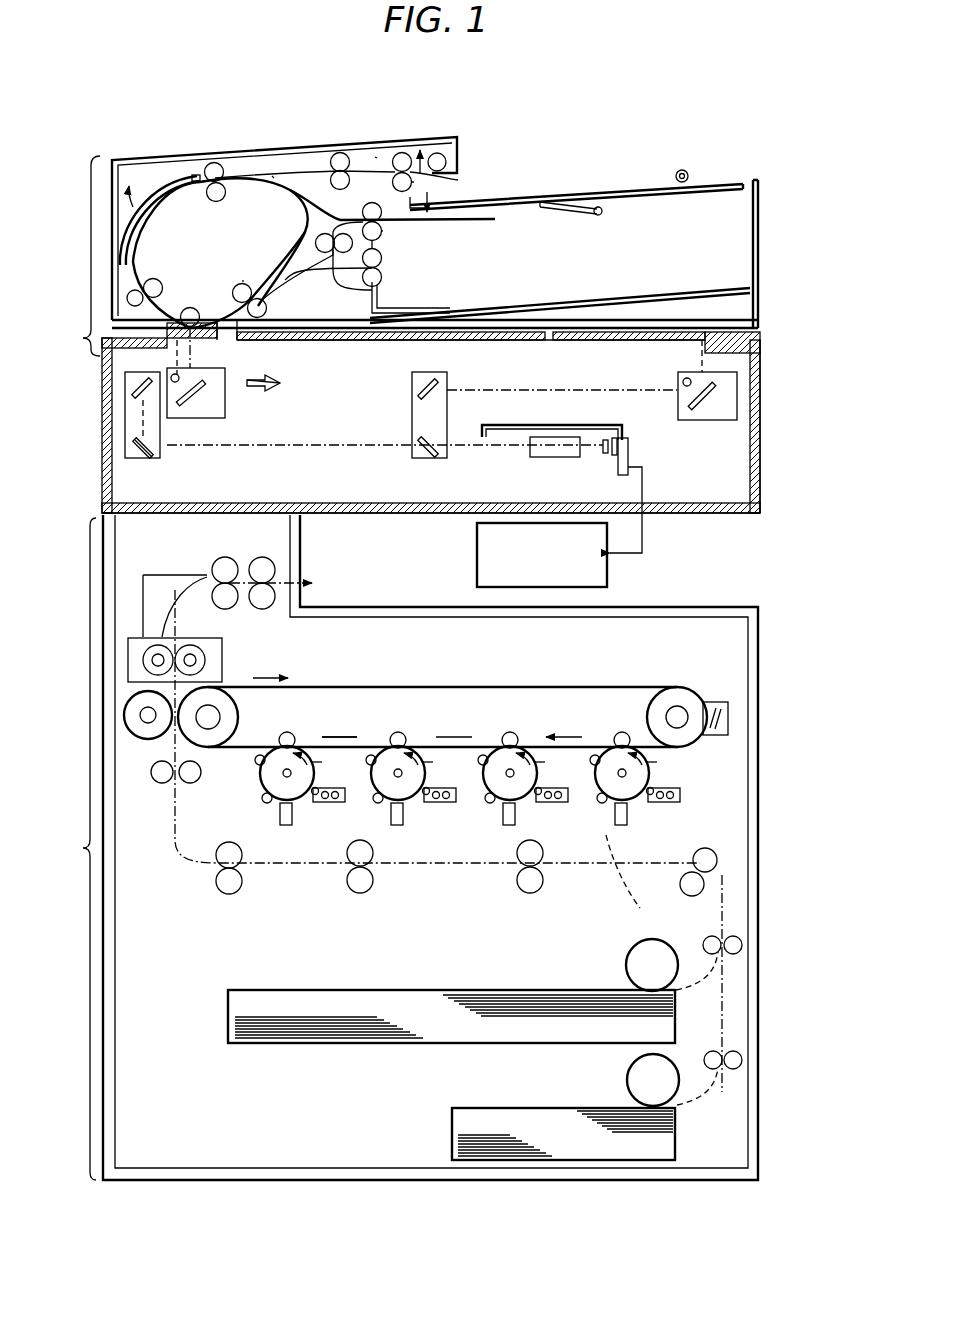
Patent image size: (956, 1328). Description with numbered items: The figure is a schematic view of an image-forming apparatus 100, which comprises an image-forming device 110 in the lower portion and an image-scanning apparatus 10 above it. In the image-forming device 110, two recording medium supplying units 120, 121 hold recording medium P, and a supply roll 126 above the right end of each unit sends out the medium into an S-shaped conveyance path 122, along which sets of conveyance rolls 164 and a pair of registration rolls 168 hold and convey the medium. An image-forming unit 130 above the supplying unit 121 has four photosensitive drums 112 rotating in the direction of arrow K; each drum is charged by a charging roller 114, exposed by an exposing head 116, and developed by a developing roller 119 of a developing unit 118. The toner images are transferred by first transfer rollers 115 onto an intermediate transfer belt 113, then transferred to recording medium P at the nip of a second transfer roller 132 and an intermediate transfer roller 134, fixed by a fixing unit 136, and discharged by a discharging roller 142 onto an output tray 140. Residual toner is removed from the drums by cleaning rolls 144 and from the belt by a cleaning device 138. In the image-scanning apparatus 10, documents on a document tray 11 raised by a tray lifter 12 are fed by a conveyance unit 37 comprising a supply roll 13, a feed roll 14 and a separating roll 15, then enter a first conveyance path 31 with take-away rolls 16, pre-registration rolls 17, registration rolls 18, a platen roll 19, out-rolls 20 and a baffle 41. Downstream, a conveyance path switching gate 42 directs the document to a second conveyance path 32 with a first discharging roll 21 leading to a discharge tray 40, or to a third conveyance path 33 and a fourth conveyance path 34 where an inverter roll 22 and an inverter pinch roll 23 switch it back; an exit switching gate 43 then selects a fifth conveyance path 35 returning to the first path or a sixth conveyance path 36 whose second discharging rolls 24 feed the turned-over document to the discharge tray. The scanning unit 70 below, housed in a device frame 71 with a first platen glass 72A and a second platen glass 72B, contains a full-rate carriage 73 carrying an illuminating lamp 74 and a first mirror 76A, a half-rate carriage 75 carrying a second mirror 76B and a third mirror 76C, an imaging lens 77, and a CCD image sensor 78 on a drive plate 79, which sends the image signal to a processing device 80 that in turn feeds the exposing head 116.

The image-forming apparatus 100 is at (88, 128).
The image-scanning apparatus 10 is at (74, 256).
The document tray 11 is at (512, 196).
The tray lifter 12 is at (560, 214).
The supply roll 13 is at (460, 160).
The feed roll 14 is at (408, 153).
The separating roll 15 is at (412, 182).
The take-away rolls 16 is at (331, 158).
The pre-registration rolls 17 is at (208, 200).
The registration rolls 18 is at (160, 283).
The platen roll 19 is at (231, 292).
The out-rolls 20 is at (244, 280).
The first discharging roll 21 is at (386, 260).
The inverter roll 22 is at (383, 231).
The inverter pinch roll 23 is at (388, 205).
The second discharging rolls 24 is at (322, 256).
The first conveyance path 31 is at (272, 174).
The second conveyance path 32 is at (383, 290).
The third conveyance path 33 is at (298, 232).
The fourth conveyance path 34 is at (466, 222).
The fifth conveyance path 35 is at (292, 190).
The sixth conveyance path 36 is at (342, 256).
The conveyance unit 37 is at (375, 154).
The discharge tray 40 is at (612, 295).
The baffle 41 is at (157, 188).
The conveyance path switching gate 42 is at (267, 300).
The exit switching gate 43 is at (340, 222).
The scanning unit 70 is at (762, 460).
The device frame 71 is at (690, 513).
The first platen glass 72A is at (547, 340).
The second platen glass 72B is at (210, 343).
The full-rate carriage 73 is at (226, 402).
The illuminating lamp 74 is at (188, 308).
The half-rate carriage 75 is at (162, 422).
The first mirror 76A is at (255, 380).
The second mirror 76B is at (140, 373).
The third mirror 76C is at (143, 458).
The imaging lens 77 is at (547, 457).
The CCD image sensor 78 is at (606, 456).
The drive plate 79 is at (630, 458).
The processing device 80 is at (477, 560).
The image-forming device 110 is at (69, 849).
The photosensitive drums 112 is at (270, 752).
The intermediate transfer belt 113 is at (482, 687).
The charging roller 114 is at (266, 800).
The first transfer roller 115 is at (295, 736).
The exposing head 116 is at (280, 824).
The developing unit 118 is at (325, 802).
The developing roller 119 is at (314, 795).
The recording medium supplying unit 120 is at (452, 1142).
The recording medium supplying unit 121 is at (228, 1022).
The conveyance path 122 is at (636, 883).
The supply roll 126 is at (627, 958).
The image-forming unit 130 is at (737, 721).
The second transfer roller 132 is at (145, 740).
The intermediate transfer roller 134 is at (236, 708).
The fixing unit 136 is at (222, 655).
The cleaning device 138 is at (714, 702).
The output tray 140 is at (373, 607).
The discharging roller 142 is at (262, 609).
The cleaning rolls 144 is at (237, 782).
The conveyance rolls 164 is at (248, 886).
The registration rolls 168 is at (188, 784).
The arrow K is at (498, 764).
The recording medium P is at (497, 990).